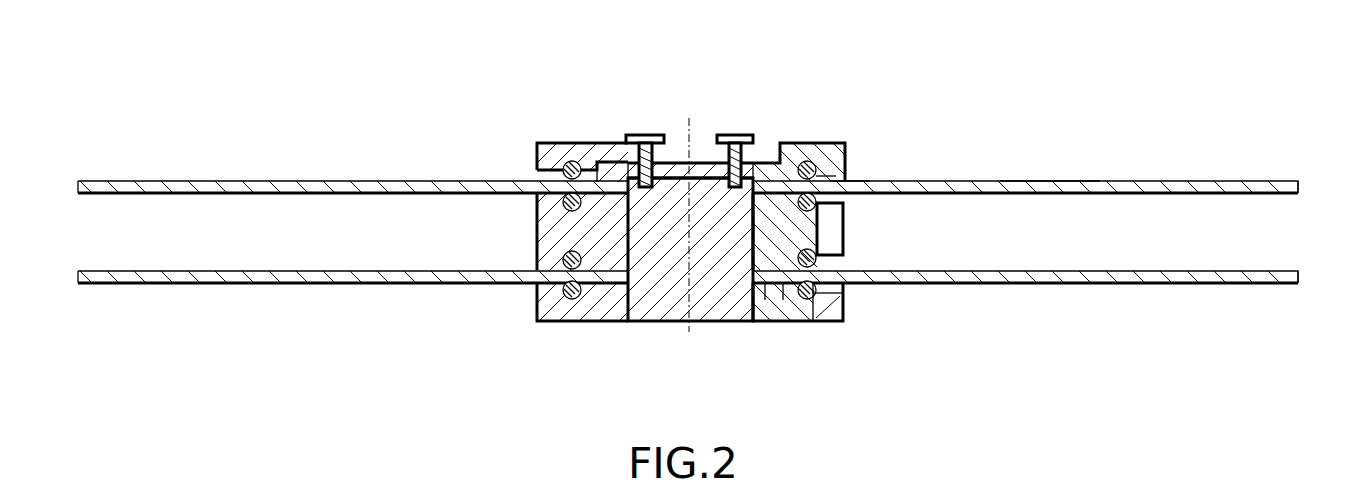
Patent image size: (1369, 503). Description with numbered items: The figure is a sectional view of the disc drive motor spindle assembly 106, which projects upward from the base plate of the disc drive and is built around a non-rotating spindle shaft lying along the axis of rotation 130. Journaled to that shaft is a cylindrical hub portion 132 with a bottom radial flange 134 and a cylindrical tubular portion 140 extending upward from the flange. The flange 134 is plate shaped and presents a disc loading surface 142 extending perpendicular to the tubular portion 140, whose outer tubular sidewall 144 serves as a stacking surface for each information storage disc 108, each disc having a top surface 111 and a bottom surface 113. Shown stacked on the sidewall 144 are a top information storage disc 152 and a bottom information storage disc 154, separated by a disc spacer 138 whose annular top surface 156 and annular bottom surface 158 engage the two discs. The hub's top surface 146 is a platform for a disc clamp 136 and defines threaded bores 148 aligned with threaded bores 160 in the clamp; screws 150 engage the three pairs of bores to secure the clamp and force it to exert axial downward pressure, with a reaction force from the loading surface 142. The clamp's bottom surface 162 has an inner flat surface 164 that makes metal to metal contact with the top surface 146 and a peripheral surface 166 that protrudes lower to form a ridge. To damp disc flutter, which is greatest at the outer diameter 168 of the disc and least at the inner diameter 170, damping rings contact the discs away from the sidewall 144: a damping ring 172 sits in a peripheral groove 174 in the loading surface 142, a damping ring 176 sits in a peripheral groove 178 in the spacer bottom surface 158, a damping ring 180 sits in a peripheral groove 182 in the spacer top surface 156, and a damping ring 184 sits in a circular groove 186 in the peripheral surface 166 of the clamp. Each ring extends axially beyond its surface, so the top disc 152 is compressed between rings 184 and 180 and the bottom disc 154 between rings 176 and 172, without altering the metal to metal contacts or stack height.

The disc drive motor spindle assembly 106 is at (564, 91).
The information storage disc 108 is at (1299, 183).
The top surface 111 is at (1042, 181).
The bottom surface 113 is at (1044, 194).
The axis of rotation 130 is at (684, 287).
The hub portion 132 is at (672, 262).
The bottom radial flange 134 is at (858, 322).
The disc clamp 136 is at (830, 145).
The disc spacer 138 is at (538, 254).
The cylindrical tubular portion 140 is at (605, 242).
The disc loading surface 142 is at (768, 300).
The tubular sidewall 144 is at (632, 234).
The top surface 146 is at (675, 168).
The threaded bores 148 is at (620, 160).
The screws 150 is at (642, 134).
The top information storage disc 152 is at (1164, 184).
The bottom information storage disc 154 is at (1200, 275).
The annular top surface 156 is at (563, 173).
The annular bottom surface 158 is at (556, 297).
The threaded bores 160 is at (620, 152).
The bottom surface 162 is at (548, 152).
The flat surface 164 is at (797, 168).
The peripheral surface 166 is at (835, 179).
The outer diameter 168 is at (78, 283).
The inner diameter 170 is at (622, 300).
The damping ring 172 is at (840, 288).
The peripheral groove 174 is at (827, 318).
The damping ring 176 is at (835, 277).
The peripheral groove 178 is at (783, 283).
The damping ring 180 is at (822, 199).
The peripheral groove 182 is at (830, 238).
The damping ring 184 is at (850, 181).
The circular groove 186 is at (815, 167).